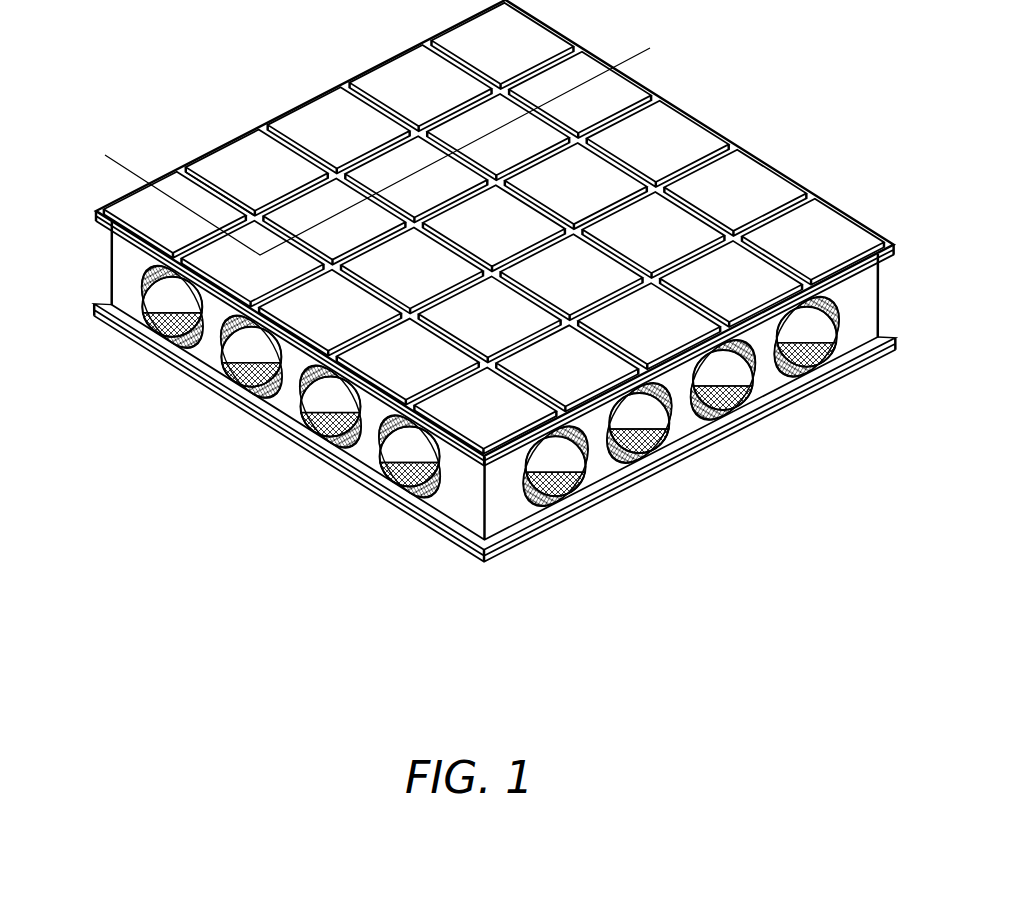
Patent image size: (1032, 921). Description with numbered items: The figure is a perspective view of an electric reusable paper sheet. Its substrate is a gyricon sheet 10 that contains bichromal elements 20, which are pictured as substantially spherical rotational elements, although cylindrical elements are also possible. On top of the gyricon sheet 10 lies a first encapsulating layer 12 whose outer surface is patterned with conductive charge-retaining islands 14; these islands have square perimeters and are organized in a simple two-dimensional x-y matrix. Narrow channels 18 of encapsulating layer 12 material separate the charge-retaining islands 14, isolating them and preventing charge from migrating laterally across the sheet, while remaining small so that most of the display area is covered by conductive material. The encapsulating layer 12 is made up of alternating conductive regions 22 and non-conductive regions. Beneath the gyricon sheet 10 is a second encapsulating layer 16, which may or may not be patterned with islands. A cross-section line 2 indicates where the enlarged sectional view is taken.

The cross-section line 2 is at (105, 155).
The gyricon sheet 10 is at (118, 257).
The first encapsulating layer 12 is at (103, 209).
The charge-retaining islands 14 is at (250, 153).
The second encapsulating layer 16 is at (95, 305).
The channels 18 is at (193, 168).
The bichromal elements 20 is at (170, 302).
The conductive regions 22 is at (100, 228).